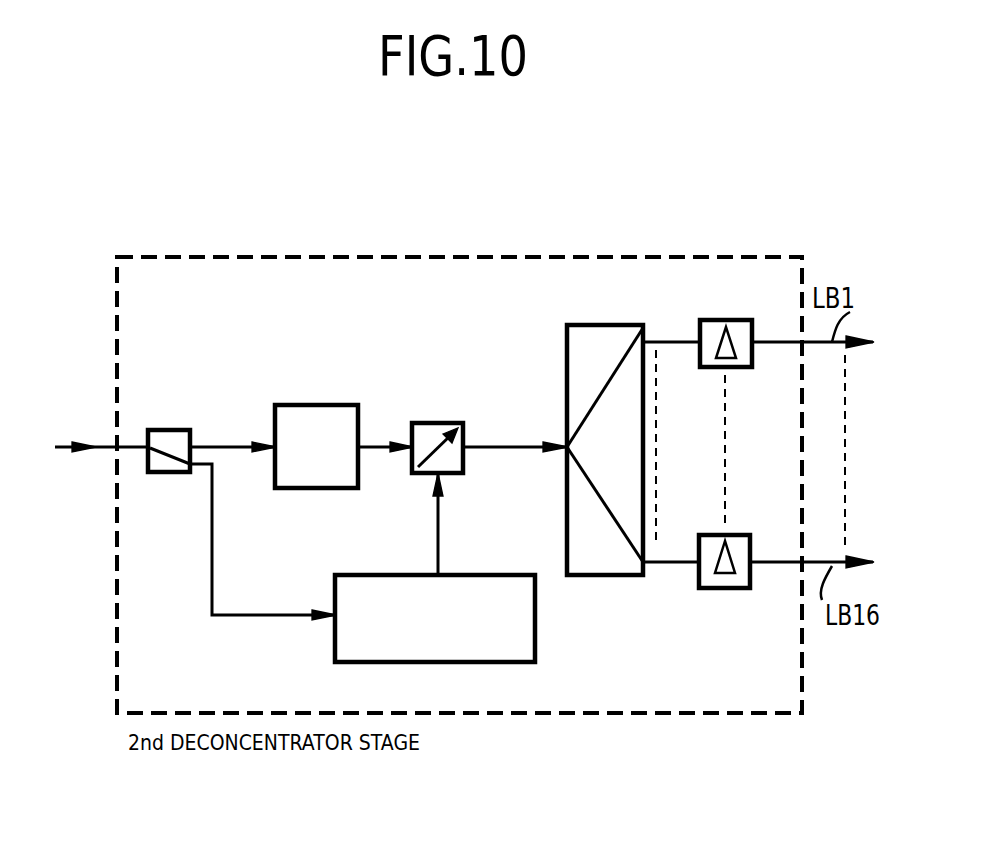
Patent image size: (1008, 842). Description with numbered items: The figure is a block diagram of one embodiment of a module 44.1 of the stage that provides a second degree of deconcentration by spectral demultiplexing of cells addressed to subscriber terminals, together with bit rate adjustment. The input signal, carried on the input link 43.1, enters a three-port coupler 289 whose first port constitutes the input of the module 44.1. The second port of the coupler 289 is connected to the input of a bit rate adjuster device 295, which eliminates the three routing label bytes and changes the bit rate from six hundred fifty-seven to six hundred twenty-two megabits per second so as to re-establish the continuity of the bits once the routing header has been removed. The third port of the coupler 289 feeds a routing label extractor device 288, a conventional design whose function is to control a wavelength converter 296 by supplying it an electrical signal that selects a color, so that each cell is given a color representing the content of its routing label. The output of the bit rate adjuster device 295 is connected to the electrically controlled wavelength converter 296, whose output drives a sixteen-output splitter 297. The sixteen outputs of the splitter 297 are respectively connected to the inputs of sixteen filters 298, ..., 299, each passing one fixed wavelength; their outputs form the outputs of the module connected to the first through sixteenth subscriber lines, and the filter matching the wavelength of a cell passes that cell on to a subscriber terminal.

The module 44.1 is at (720, 257).
The input link 43.1 is at (68, 442).
The three-port coupler 289 is at (179, 430).
The bit rate adjuster device 295 is at (331, 404).
The wavelength converter 296 is at (445, 424).
The 16-output splitter 297 is at (587, 332).
The filter 298 is at (710, 321).
The filter 299 is at (720, 588).
The routing label extractor device 288 is at (363, 582).